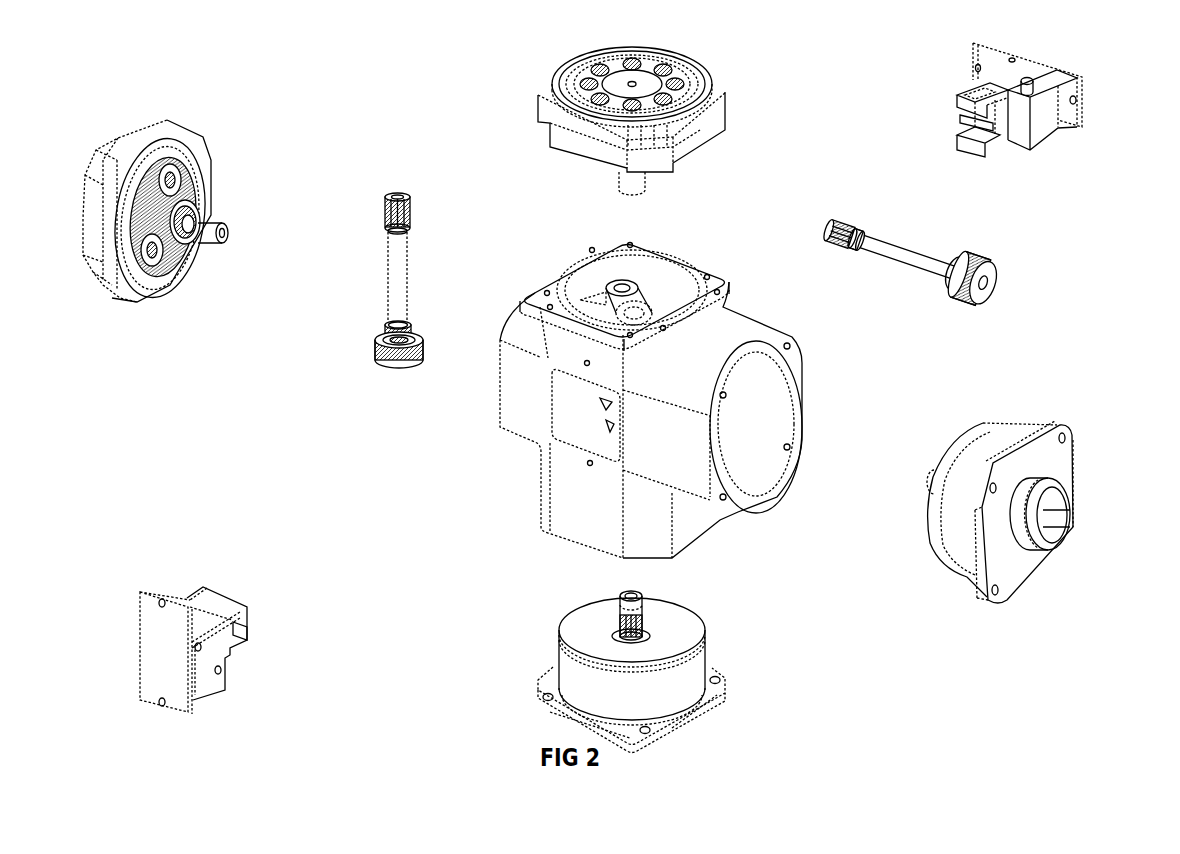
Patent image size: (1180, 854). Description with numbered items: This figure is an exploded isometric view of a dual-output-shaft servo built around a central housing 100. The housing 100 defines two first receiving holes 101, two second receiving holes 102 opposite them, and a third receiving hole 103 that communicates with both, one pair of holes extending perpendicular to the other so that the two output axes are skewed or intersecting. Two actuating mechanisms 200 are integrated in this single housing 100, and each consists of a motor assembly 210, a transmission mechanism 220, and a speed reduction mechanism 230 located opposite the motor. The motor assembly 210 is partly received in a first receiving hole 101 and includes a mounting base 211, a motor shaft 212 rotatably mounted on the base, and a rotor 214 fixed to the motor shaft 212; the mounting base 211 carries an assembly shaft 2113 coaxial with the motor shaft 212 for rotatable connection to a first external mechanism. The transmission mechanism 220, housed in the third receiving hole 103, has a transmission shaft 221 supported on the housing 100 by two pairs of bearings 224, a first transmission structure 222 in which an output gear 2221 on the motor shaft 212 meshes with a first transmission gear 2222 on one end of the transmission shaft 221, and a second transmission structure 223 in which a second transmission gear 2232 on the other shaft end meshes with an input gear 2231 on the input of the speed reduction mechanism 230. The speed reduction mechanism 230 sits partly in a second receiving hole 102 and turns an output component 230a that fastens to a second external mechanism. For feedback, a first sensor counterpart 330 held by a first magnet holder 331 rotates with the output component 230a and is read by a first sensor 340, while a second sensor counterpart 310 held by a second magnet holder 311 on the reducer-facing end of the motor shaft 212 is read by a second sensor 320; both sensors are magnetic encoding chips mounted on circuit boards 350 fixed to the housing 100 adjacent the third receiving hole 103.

The housing 100 is at (735, 327).
The first receiving hole 101 is at (762, 430).
The second receiving hole 102 is at (655, 280).
The third receiving hole 103 is at (580, 410).
The actuating mechanism 200 is at (1019, 410).
The motor assembly 210 is at (1072, 430).
The mounting base 211 is at (1060, 468).
The motor shaft 212 is at (593, 641).
The rotor 214 is at (950, 542).
The assembly shaft 2113 is at (1054, 537).
The transmission mechanism 220 is at (380, 288).
The transmission shaft 221 is at (402, 291).
The first transmission structure 222 is at (372, 362).
The output gear 2221 is at (652, 624).
The first transmission gear 2222 is at (384, 378).
The second transmission structure 223 is at (383, 207).
The input gear 2231 is at (207, 190).
The second transmission gear 2232 is at (412, 212).
The bearing 224 is at (385, 229).
The speed reduction mechanism 230 is at (138, 308).
The output component 230a is at (598, 79).
The second sensor counterpart 310 is at (931, 460).
The second magnet holder 311 is at (618, 606).
The second sensor 320 is at (975, 160).
The first sensor counterpart 330 is at (223, 244).
The first magnet holder 331 is at (205, 250).
The first sensor 340 is at (968, 92).
The circuit board 350 is at (975, 118).